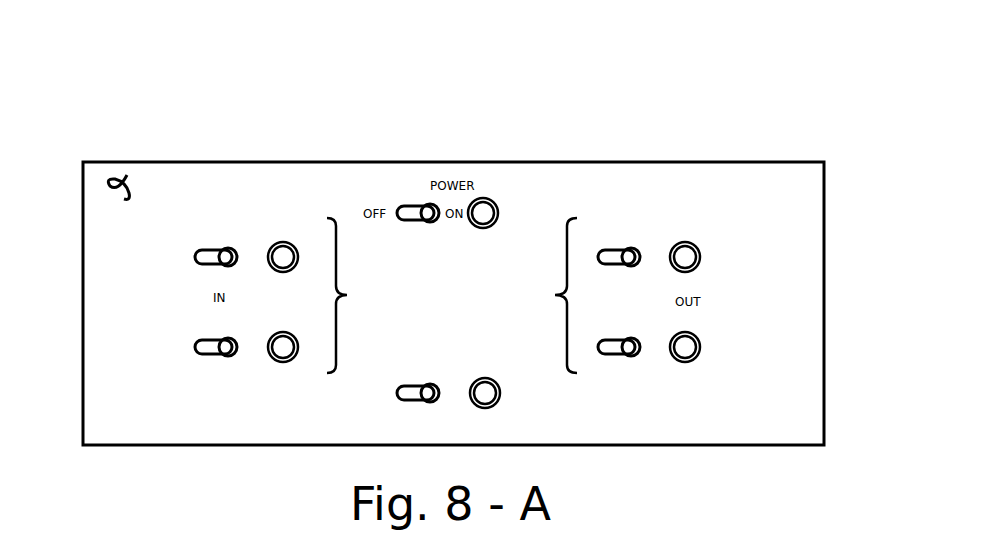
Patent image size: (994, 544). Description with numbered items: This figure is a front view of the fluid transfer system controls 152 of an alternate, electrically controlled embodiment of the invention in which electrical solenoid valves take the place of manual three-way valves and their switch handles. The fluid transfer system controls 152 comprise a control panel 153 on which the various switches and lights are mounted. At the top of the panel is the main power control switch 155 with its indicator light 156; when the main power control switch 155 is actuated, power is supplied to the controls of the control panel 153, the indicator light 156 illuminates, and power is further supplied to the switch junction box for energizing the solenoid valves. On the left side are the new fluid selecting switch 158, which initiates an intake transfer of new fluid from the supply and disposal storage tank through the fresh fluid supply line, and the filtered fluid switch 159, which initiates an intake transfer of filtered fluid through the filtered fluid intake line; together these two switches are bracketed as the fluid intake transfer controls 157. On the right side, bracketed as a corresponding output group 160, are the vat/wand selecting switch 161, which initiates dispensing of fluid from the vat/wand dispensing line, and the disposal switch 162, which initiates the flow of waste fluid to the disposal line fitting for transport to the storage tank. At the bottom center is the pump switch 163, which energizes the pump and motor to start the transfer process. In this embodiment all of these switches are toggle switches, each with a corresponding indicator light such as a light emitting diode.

The fluid transfer system controls 152 is at (319, 97).
The control panel 153 is at (127, 175).
The main power control switch 155 is at (407, 205).
The indicator light 156 is at (486, 210).
The fluid intake transfer controls 157 is at (360, 297).
The new fluid selecting switch 158 is at (95, 257).
The filtered fluid switch 159 is at (88, 345).
The out controls group 160 is at (545, 294).
The vat/wand selecting switch 161 is at (815, 260).
The disposal switch 162 is at (810, 350).
The pump switch 163 is at (455, 381).